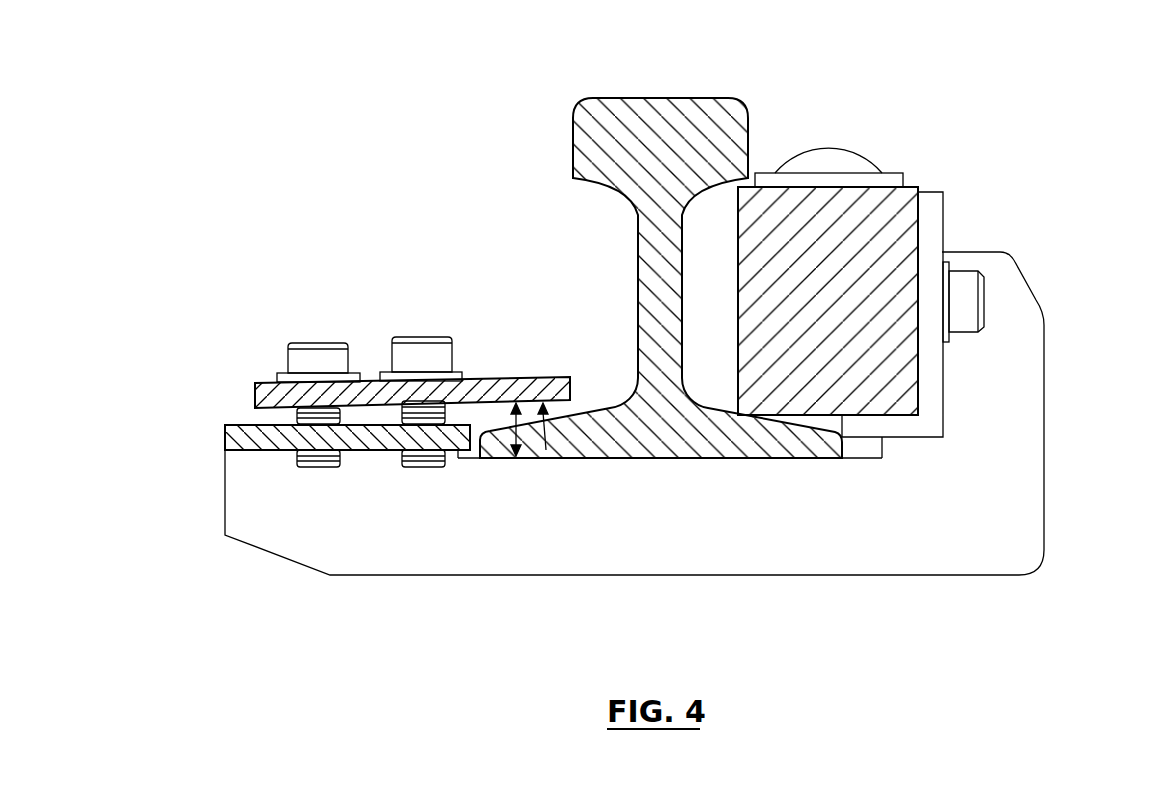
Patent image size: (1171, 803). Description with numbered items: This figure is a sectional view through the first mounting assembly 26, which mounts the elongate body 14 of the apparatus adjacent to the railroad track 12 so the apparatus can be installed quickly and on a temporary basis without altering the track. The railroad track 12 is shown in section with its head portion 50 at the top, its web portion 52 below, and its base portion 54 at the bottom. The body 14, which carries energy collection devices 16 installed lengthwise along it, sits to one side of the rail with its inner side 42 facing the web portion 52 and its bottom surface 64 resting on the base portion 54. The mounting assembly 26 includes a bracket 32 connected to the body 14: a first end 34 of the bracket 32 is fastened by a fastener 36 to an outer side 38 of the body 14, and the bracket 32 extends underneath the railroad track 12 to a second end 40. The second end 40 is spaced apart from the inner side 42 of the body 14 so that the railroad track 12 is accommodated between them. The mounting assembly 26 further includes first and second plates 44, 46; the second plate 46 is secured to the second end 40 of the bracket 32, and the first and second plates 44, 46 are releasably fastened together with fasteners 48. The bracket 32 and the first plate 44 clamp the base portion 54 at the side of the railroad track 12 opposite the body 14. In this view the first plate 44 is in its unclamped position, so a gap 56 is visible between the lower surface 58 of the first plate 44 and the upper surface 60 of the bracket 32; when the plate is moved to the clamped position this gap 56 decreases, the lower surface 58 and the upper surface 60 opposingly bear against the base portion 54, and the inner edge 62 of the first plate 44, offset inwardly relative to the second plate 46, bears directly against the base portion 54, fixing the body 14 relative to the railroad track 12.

The railroad track 12 is at (713, 92).
The body 14 is at (893, 212).
The energy collection devices 16 is at (837, 135).
The first mounting assembly 26 is at (396, 592).
The bracket 32 is at (605, 553).
The first end of the bracket 34 is at (1072, 437).
The fastener 36 is at (967, 302).
The outer side of the body 38 is at (932, 238).
The second end of the bracket 40 is at (255, 560).
The inner side of the body 42 is at (726, 264).
The first plate 44 is at (372, 385).
The second plate 46 is at (237, 422).
The fasteners 48 is at (308, 353).
The head portion 50 is at (578, 140).
The web portion 52 is at (652, 248).
The base portion 54 is at (657, 428).
The gap 56 is at (530, 457).
The lower surface of the first plate 58 is at (546, 450).
The upper surface of the bracket 60 is at (565, 445).
The inner edge of the first plate 62 is at (575, 377).
The bottom surface of the body 64 is at (815, 427).